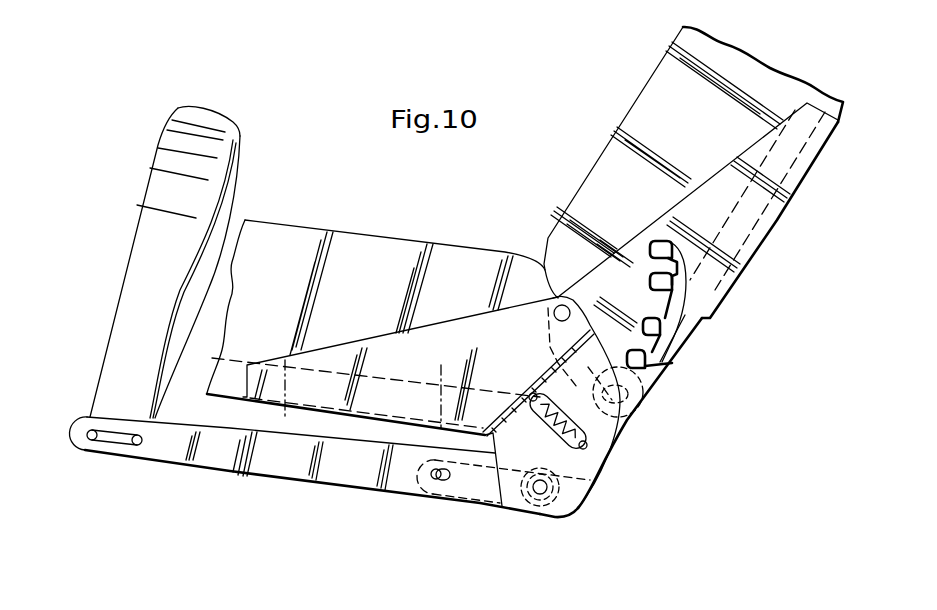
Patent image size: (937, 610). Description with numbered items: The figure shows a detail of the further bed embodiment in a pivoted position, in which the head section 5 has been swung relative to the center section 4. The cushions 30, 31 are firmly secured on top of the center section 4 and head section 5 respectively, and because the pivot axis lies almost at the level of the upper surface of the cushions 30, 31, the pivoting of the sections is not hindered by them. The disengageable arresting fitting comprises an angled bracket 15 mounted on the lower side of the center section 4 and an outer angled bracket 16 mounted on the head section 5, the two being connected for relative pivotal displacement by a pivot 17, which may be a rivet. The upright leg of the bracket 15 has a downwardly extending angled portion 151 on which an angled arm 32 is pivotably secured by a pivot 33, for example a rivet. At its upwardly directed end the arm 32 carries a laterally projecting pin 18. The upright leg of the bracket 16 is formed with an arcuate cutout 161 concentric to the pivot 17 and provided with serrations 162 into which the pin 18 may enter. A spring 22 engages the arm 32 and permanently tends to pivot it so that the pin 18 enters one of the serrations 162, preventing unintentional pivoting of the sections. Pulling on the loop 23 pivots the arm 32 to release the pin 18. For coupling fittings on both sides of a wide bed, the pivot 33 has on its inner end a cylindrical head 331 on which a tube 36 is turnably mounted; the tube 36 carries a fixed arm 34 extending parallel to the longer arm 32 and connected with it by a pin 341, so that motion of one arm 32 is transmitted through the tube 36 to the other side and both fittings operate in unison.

The center section 4 is at (223, 390).
The head section 5 is at (775, 202).
The angled bracket 15 is at (465, 328).
The angled portion 151 is at (508, 495).
The angled bracket 16 is at (690, 210).
The arcuate cutout 161 is at (678, 282).
The serrations 162 is at (695, 360).
The pivot 17 is at (560, 292).
The pin 18 is at (643, 412).
The spring 22 is at (587, 460).
The loop 23 is at (238, 130).
The cushion 30 is at (352, 243).
The cushion 31 is at (653, 83).
The angled arm 32 is at (275, 462).
The pivot 33 is at (540, 494).
The cylindrical head 331 is at (567, 515).
The arm 34 is at (463, 485).
The pin 341 is at (430, 480).
The tube 36 is at (580, 498).